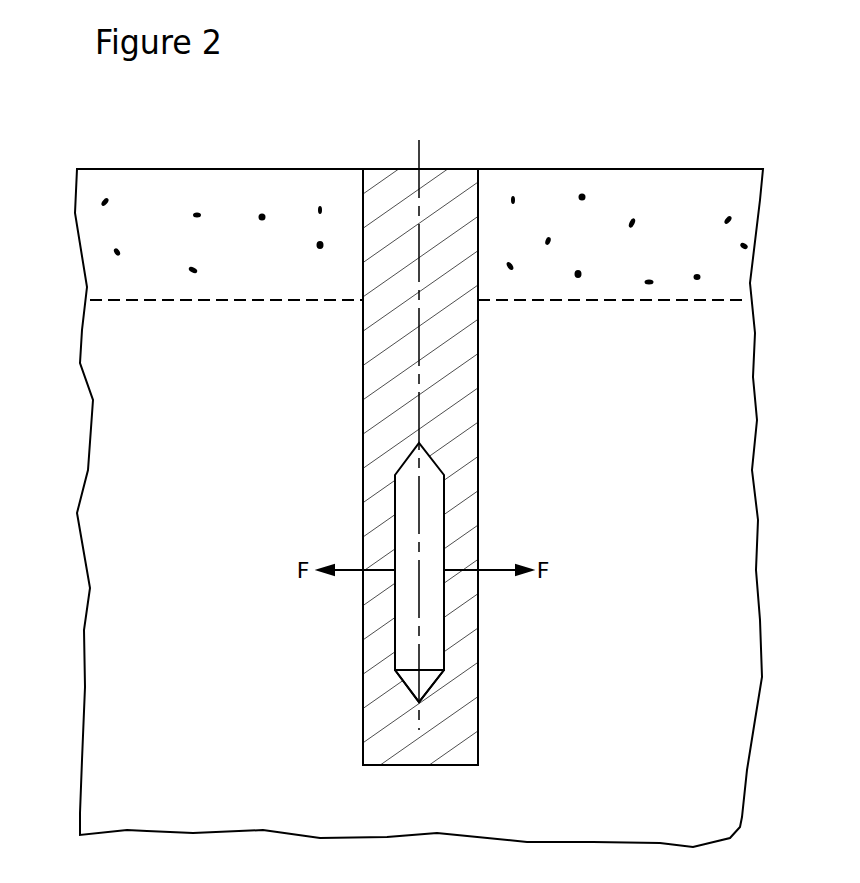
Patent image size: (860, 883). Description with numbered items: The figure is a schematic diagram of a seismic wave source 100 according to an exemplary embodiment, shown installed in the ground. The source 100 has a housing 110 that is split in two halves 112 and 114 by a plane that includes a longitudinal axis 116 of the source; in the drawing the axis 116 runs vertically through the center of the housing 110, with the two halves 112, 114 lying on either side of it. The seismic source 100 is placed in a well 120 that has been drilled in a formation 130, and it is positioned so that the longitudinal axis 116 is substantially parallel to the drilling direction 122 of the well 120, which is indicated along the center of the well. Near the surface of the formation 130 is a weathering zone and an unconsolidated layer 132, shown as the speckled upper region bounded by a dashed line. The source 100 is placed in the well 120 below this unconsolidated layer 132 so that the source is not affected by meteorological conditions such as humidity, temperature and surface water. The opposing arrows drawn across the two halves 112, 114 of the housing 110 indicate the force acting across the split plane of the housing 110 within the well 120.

The seismic wave source 100 is at (444, 485).
The housing 110 is at (407, 687).
The first half of housing 112 is at (395, 580).
The second half of housing 114 is at (444, 585).
The longitudinal axis 116 is at (419, 643).
The well 120 is at (478, 367).
The drilling direction 122 is at (419, 198).
The formation 130 is at (127, 440).
The unconsolidated layer 132 is at (658, 210).